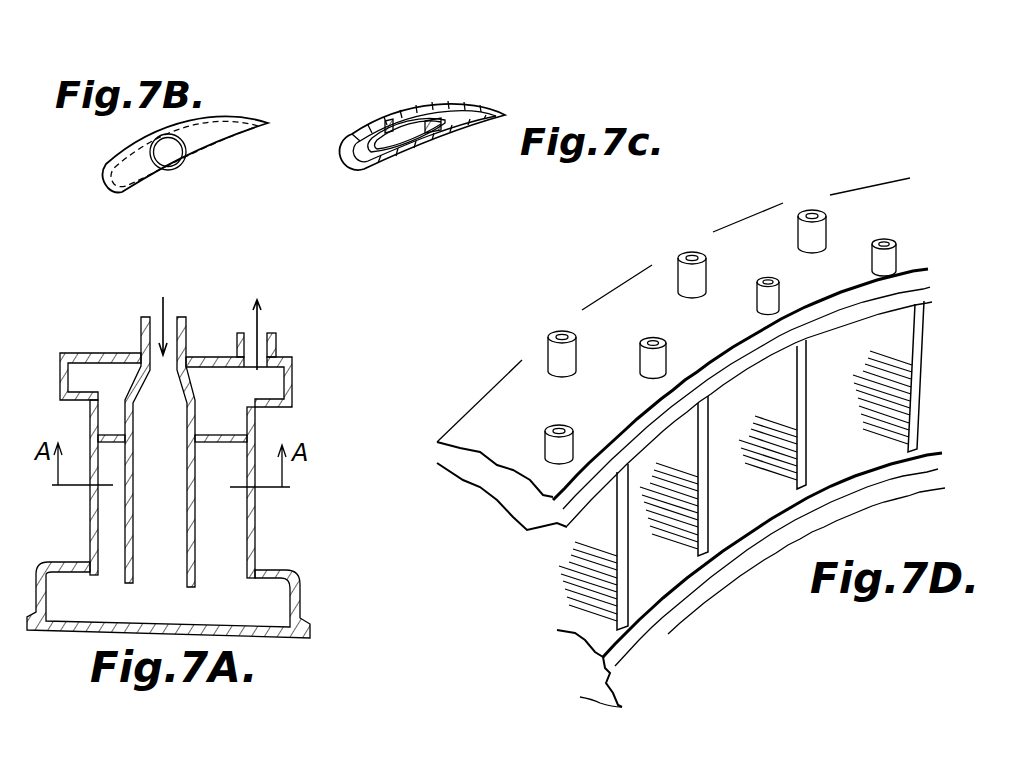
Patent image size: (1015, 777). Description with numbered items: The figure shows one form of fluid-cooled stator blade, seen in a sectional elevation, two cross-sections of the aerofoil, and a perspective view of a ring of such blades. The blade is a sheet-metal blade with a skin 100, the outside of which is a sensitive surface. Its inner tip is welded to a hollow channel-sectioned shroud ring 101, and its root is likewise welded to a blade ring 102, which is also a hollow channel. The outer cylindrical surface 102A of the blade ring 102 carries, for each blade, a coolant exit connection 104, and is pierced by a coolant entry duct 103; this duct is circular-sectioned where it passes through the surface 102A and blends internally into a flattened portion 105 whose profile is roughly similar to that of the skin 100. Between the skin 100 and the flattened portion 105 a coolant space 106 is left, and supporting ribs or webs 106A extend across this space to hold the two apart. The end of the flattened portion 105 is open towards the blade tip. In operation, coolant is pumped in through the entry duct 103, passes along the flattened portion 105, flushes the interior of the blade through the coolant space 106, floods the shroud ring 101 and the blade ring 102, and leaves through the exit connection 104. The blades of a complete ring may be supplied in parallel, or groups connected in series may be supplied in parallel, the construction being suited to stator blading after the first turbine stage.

In FIG. 7A, the skin 100 is at (252, 551).
In FIG. 7B, the skin 100 is at (227, 120).
In FIG. 7C, the skin 100 is at (470, 105).
In FIG. 7D, the skin 100 is at (777, 390).
In FIG. 7A, the shroud ring 101 is at (290, 606).
In FIG. 7D, the shroud ring 101 is at (722, 613).
In FIG. 7A, the blade ring 102 is at (296, 380).
In FIG. 7D, the blade ring 102 is at (610, 280).
In FIG. 7A, the outer cylindrical surface 102A is at (80, 353).
In FIG. 7D, the outer cylindrical surface 102A is at (537, 393).
In FIG. 7A, the coolant entry duct 103 is at (172, 313).
In FIG. 7B, the coolant entry duct 103 is at (167, 157).
In FIG. 7D, the coolant entry duct 103 is at (550, 347).
In FIG. 7A, the coolant exit connection 104 is at (265, 325).
In FIG. 7D, the coolant exit connection 104 is at (658, 357).
In FIG. 7A, the flattened portion 105 is at (183, 524).
In FIG. 7C, the flattened portion 105 is at (445, 127).
In FIG. 7A, the coolant space 106 is at (220, 515).
In FIG. 7C, the coolant space 106 is at (358, 156).
In FIG. 7A, the supporting ribs or webs 106A is at (227, 436).
In FIG. 7C, the supporting ribs or webs 106A is at (386, 124).